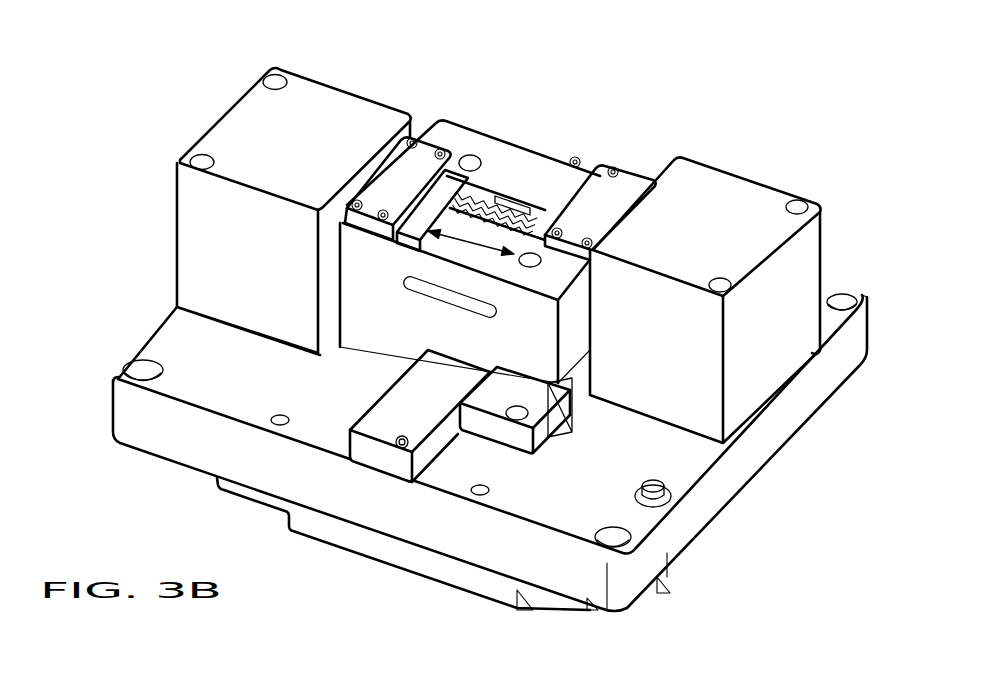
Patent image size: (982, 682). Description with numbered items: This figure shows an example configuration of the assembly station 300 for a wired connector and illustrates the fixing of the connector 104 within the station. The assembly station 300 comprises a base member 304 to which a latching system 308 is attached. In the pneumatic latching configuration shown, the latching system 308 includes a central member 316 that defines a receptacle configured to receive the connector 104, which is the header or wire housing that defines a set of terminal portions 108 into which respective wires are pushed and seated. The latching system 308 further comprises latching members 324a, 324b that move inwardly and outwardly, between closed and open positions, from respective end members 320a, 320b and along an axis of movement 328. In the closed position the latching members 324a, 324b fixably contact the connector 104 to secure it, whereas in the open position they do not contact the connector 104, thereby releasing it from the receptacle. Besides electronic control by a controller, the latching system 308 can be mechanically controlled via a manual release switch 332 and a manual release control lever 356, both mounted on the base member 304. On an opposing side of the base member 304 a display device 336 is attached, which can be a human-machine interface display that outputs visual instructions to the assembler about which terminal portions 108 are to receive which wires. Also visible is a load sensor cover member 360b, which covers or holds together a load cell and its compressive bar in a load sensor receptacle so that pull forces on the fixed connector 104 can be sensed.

The assembly station 300 is at (163, 55).
The latching system 308 is at (707, 93).
The base member 304 is at (783, 420).
The central member 316 is at (463, 142).
The end member 320a is at (325, 122).
The end member 320b is at (755, 205).
The latching member 324a is at (400, 168).
The latching member 324b is at (620, 190).
The connector 104 is at (483, 151).
The terminal portions 108 is at (487, 215).
The axis of movement 328 is at (470, 243).
The manual release switch 332 is at (663, 493).
The display device 336 is at (313, 530).
The manual release control lever 356 is at (383, 463).
The load sensor cover member 360b is at (490, 430).